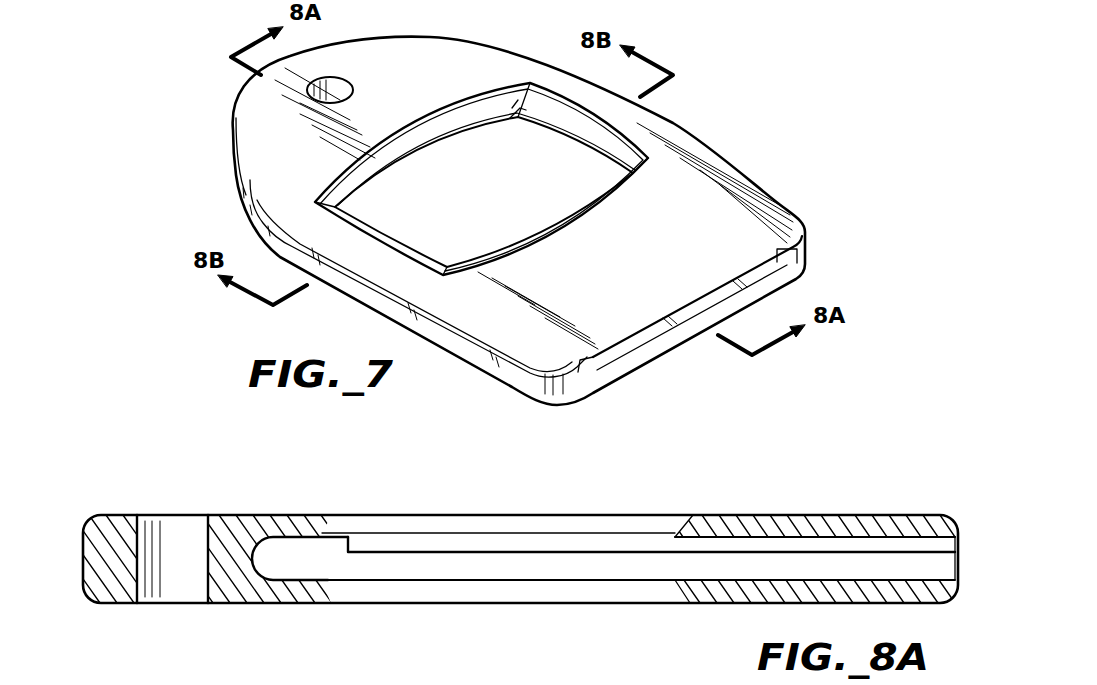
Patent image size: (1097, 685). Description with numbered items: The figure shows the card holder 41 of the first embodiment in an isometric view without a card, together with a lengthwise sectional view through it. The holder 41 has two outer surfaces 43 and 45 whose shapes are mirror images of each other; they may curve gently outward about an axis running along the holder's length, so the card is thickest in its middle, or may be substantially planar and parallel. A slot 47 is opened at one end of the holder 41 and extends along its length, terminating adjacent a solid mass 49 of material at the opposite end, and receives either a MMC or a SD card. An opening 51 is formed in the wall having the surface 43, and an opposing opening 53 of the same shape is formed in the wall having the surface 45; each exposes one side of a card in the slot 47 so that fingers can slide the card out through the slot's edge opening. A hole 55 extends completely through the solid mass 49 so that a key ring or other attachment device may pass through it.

In FIG. 7, the card holder 41 is at (745, 127).
In FIG. 8A, the outer surface 43 is at (755, 520).
In FIG. 8A, the outer surface 45 is at (733, 603).
In FIG. 7, the slot 47 is at (762, 270).
In FIG. 8A, the slot 47 is at (845, 565).
In FIG. 7, the solid mass 49 is at (447, 52).
In FIG. 8A, the solid mass 49 is at (232, 548).
In FIG. 8A, the opening 51 is at (468, 525).
In FIG. 8A, the opening 53 is at (497, 590).
In FIG. 7, the hole 55 is at (340, 84).
In FIG. 8A, the hole 55 is at (170, 540).